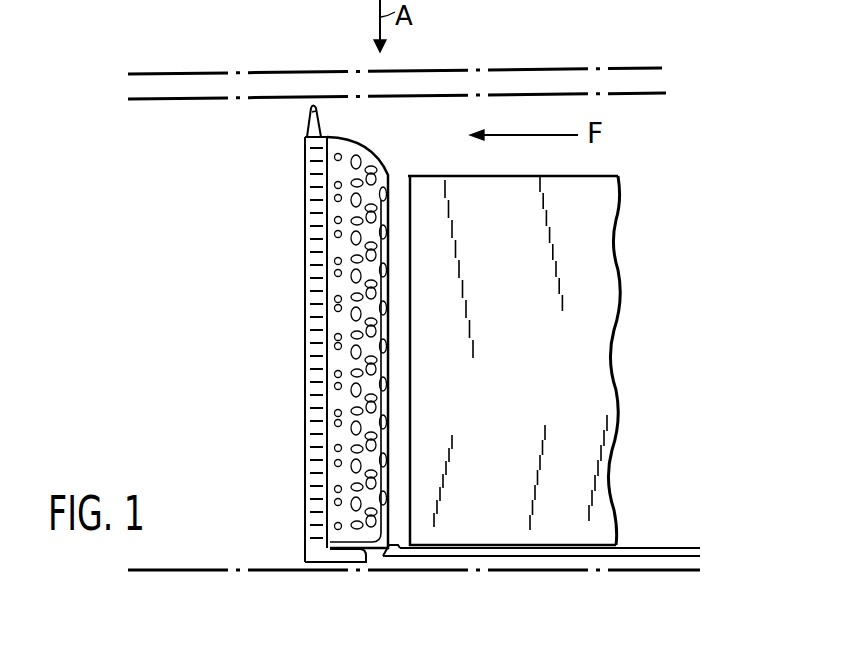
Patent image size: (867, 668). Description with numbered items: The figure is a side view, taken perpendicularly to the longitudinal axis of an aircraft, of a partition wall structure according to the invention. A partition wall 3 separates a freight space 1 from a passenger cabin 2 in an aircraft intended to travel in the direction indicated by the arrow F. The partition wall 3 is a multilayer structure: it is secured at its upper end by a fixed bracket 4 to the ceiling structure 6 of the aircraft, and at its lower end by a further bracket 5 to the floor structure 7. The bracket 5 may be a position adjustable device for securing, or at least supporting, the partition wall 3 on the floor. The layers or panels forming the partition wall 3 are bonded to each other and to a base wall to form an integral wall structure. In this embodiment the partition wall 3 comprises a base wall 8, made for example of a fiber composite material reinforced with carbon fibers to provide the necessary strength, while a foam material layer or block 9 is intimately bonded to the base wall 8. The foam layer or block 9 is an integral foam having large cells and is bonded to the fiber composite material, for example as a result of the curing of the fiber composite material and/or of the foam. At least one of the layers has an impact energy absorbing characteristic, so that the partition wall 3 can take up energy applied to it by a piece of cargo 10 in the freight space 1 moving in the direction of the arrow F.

The freight space 1 is at (682, 314).
The passenger cabin 2 is at (210, 316).
The partition wall 3 is at (357, 125).
The fixed bracket 4 is at (313, 104).
The bracket 5 is at (345, 563).
The ceiling structure 6 is at (258, 97).
The floor structure 7 is at (445, 558).
The base wall 8 is at (313, 447).
The foam material layer or block 9 is at (385, 175).
The piece of cargo 10 is at (515, 399).